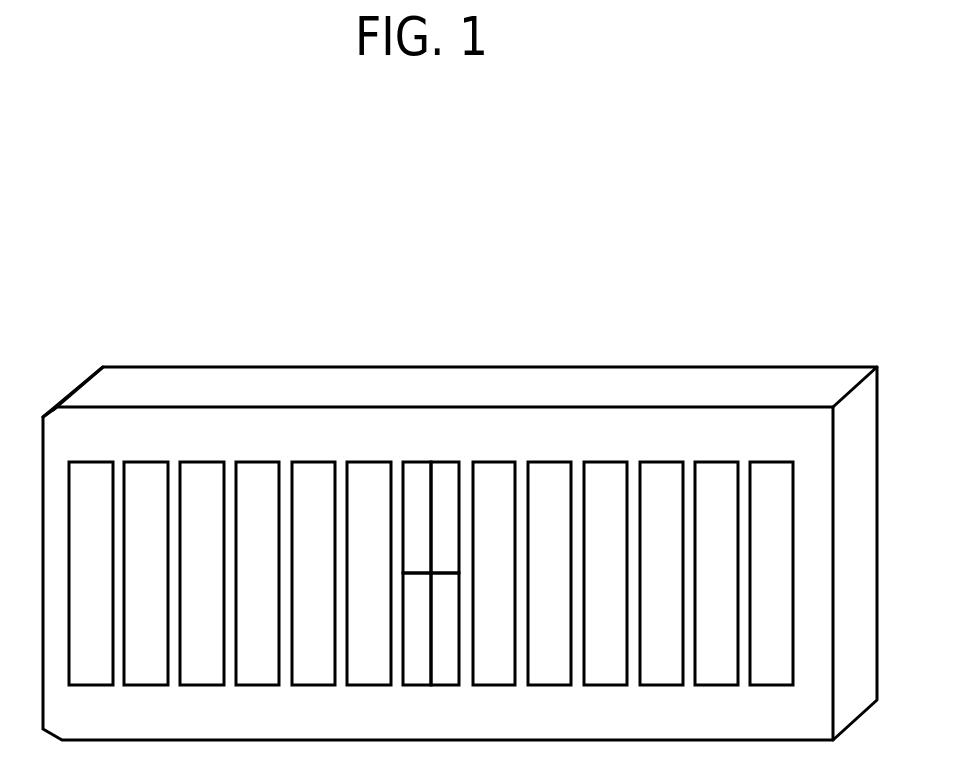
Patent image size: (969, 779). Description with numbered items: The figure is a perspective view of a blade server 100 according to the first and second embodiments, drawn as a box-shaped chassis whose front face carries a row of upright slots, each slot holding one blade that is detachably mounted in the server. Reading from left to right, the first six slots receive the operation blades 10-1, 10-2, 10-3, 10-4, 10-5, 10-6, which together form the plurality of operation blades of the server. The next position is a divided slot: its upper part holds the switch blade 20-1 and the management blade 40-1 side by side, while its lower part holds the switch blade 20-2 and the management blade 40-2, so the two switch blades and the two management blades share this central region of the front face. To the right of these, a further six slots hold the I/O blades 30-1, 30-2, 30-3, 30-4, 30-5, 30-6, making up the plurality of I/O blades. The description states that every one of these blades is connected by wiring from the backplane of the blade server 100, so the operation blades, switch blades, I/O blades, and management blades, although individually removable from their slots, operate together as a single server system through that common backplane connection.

The blade server 100 is at (682, 380).
The operation blade 10-1 is at (98, 477).
The operation blade 10-2 is at (153, 670).
The operation blade 10-3 is at (208, 477).
The operation blade 10-4 is at (265, 670).
The operation blade 10-5 is at (307, 477).
The operation blade 10-6 is at (377, 670).
The switch blade 20-1 is at (417, 477).
The switch blade 20-2 is at (417, 670).
The management blade 40-1 is at (445, 477).
The management blade 40-2 is at (444, 670).
The I/O blade 30-1 is at (502, 477).
The I/O blade 30-2 is at (557, 670).
The I/O blade 30-3 is at (612, 477).
The I/O blade 30-4 is at (667, 670).
The I/O blade 30-5 is at (723, 477).
The I/O blade 30-6 is at (778, 670).